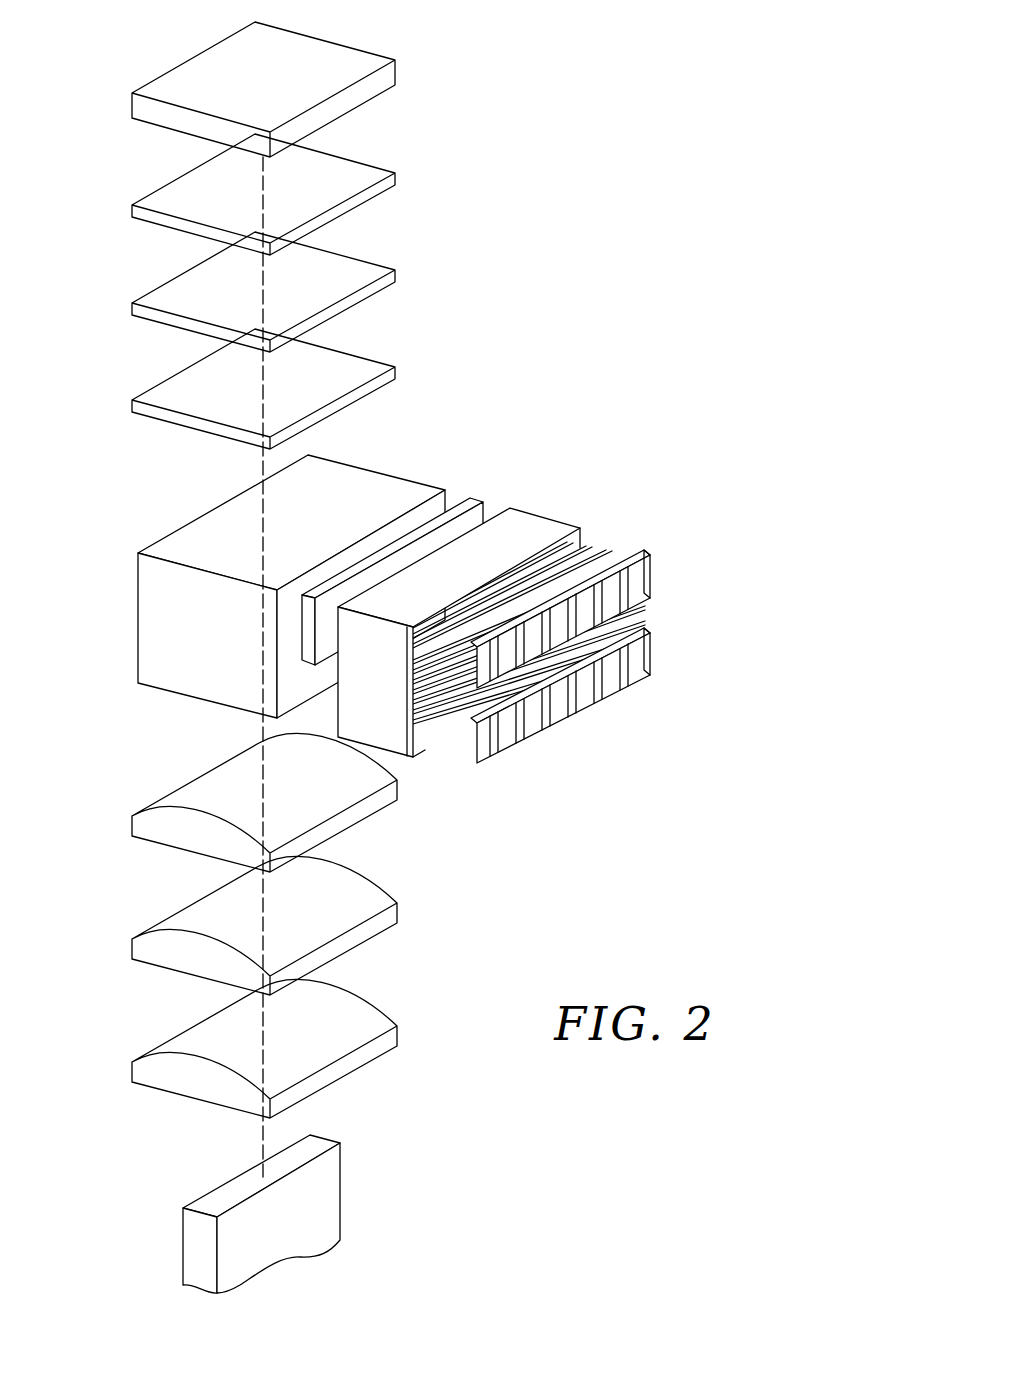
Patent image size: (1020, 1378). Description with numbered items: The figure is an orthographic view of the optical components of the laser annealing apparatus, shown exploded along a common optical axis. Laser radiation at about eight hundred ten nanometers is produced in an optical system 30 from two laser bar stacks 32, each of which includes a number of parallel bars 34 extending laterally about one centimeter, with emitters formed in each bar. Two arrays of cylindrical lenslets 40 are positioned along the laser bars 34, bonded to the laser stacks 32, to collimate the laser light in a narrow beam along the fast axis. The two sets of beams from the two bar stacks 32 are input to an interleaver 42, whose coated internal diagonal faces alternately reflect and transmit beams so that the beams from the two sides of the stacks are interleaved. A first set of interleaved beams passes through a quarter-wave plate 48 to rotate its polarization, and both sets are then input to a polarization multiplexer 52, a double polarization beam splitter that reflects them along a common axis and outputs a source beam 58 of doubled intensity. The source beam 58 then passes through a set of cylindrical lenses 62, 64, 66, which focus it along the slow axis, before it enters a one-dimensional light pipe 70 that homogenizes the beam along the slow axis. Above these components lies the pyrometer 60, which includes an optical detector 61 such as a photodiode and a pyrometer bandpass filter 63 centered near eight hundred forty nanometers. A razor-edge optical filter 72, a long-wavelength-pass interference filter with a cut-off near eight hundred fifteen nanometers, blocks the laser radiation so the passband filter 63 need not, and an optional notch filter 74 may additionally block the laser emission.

The optical system 30 is at (599, 496).
The laser bar stack 32 is at (650, 589).
The parallel bars 34 is at (645, 673).
The cylindrical lenslets 40 is at (620, 553).
The interleaver 42 is at (531, 522).
The quarter-wave plate 48 is at (484, 500).
The polarization multiplexer (PMUX) 52 is at (414, 487).
The source beam 58 is at (263, 1140).
The pyrometer 60 is at (396, 129).
The optical detector 61 is at (149, 97).
The cylindrical lens 62 is at (152, 826).
The pyrometer bandpass filter 63 is at (149, 207).
The cylindrical lens 64 is at (152, 949).
The cylindrical lens 66 is at (152, 1072).
The one-dimensional light pipe 70 is at (199, 1246).
The razor-edge optical filter 72 is at (149, 307).
The notch filter 74 is at (149, 405).